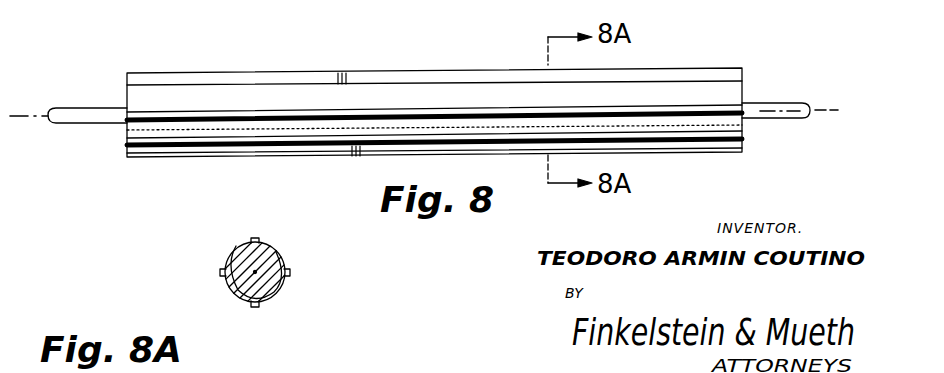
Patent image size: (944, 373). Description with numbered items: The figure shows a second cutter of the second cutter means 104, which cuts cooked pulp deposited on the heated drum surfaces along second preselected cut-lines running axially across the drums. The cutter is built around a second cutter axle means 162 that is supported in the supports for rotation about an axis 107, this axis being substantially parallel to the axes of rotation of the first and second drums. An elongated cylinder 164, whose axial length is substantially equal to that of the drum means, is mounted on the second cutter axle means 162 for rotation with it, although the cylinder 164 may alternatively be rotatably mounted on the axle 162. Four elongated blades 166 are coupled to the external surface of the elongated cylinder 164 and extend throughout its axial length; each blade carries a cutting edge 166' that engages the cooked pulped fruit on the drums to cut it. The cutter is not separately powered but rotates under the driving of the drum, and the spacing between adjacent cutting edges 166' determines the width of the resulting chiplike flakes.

In FIG. 8, the second cutter means 104 is at (765, 51).
In FIG. 8, the axis 107 is at (820, 110).
In FIG. 8A, the axis 107 is at (255, 272).
In FIG. 8, the second cutter axle means 162 is at (755, 100).
In FIG. 8, the elongated cylinder 164 is at (133, 130).
In FIG. 8A, the elongated cylinder 164 is at (270, 246).
In FIG. 8, the elongated blades 166 is at (434, 113).
In FIG. 8A, the elongated blades 166 is at (258, 271).
In FIG. 8, the cutting edges 166' is at (458, 112).
In FIG. 8A, the cutting edges 166' is at (251, 272).